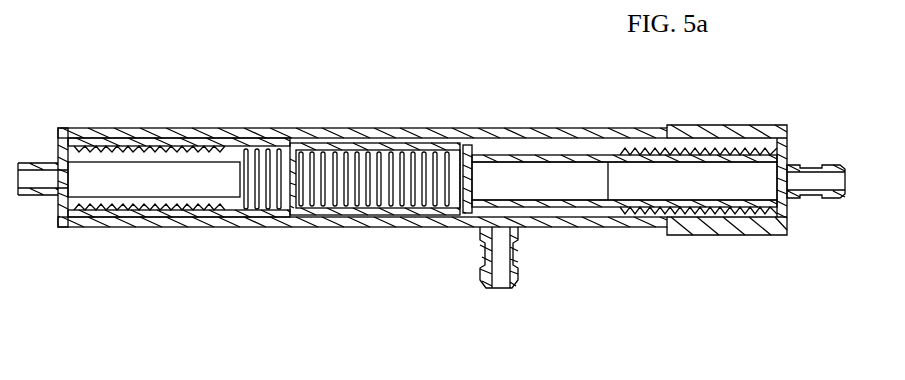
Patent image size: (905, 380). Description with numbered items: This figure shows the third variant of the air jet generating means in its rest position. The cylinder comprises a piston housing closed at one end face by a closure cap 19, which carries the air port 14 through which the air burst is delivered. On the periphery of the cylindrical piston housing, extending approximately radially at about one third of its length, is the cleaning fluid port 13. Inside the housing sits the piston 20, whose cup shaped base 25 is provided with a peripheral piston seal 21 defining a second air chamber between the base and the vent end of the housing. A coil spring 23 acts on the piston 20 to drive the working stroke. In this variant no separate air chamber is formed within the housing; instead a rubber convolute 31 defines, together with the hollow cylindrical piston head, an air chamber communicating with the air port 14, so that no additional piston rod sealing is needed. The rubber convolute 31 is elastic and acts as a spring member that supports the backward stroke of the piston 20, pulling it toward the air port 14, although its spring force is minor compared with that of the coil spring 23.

The cleaning fluid port 13 is at (518, 288).
The air port 14 is at (827, 197).
The closure cap 19 is at (748, 237).
The piston 20 is at (507, 130).
The peripheral piston seal 21 is at (468, 130).
The coil spring 23 is at (313, 130).
The cup shaped base 25 is at (368, 130).
The rubber convolute 31 is at (633, 153).